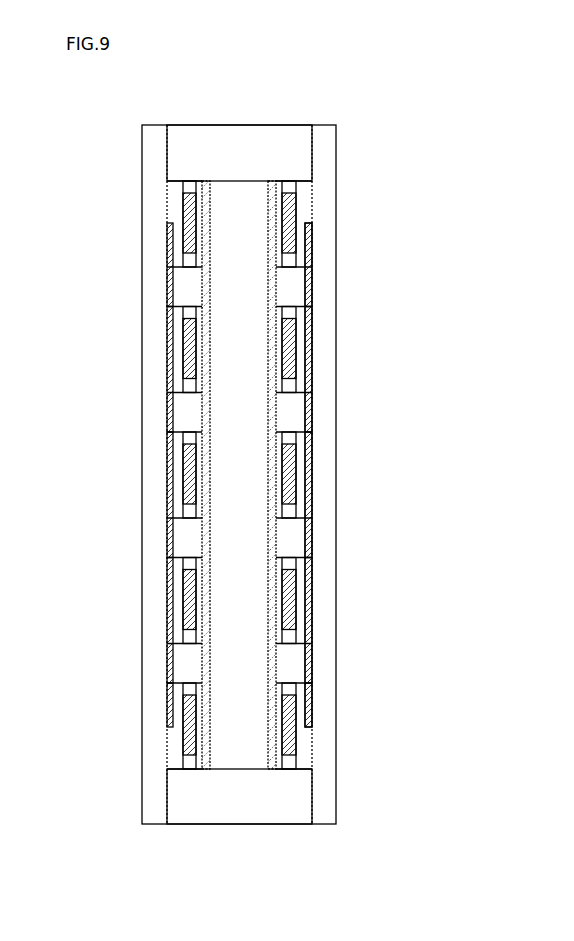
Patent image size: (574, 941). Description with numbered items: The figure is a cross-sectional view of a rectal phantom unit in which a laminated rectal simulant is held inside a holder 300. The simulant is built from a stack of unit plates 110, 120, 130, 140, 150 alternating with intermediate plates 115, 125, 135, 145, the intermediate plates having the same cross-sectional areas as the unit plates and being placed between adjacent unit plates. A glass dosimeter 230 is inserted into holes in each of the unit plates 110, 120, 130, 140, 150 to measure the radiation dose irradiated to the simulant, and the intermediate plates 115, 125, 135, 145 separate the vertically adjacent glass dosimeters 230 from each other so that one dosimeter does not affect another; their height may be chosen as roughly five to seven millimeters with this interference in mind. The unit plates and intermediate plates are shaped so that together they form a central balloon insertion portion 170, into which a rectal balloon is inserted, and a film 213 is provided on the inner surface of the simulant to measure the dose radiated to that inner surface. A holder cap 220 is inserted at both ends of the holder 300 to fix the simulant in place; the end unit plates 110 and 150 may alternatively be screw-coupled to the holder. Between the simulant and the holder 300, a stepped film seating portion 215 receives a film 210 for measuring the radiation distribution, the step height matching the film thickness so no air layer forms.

The unit plate 110 is at (175, 196).
The intermediate plate 115 is at (290, 282).
The unit plate 120 is at (175, 370).
The intermediate plate 125 is at (290, 410).
The unit plate 130 is at (175, 495).
The intermediate plate 135 is at (290, 535).
The unit plate 140 is at (180, 625).
The intermediate plate 145 is at (290, 665).
The unit plate 150 is at (175, 742).
The balloon insertion portion 170 is at (233, 737).
The film 210 is at (312, 600).
The film 213 is at (272, 752).
The film seating portion 215 is at (303, 475).
The holder cap 220 is at (255, 145).
The glass dosimeter 230 is at (287, 225).
The holder 300 is at (330, 320).